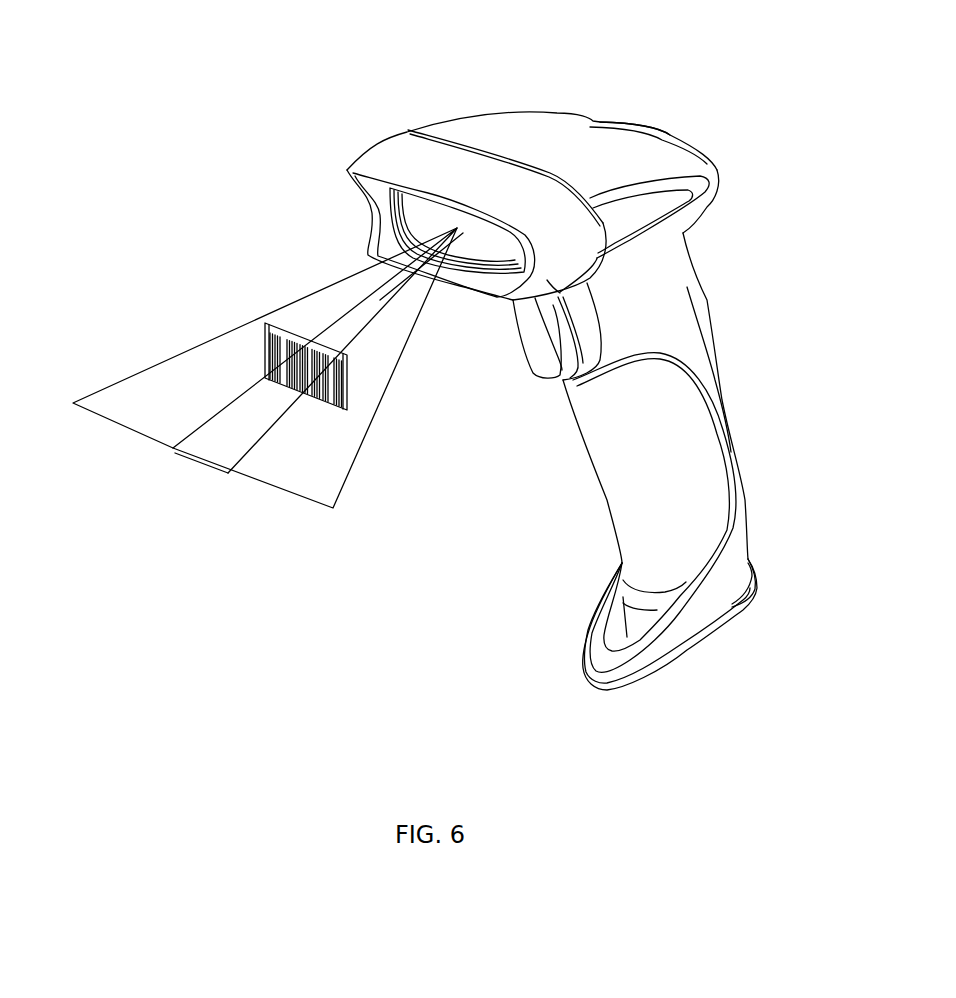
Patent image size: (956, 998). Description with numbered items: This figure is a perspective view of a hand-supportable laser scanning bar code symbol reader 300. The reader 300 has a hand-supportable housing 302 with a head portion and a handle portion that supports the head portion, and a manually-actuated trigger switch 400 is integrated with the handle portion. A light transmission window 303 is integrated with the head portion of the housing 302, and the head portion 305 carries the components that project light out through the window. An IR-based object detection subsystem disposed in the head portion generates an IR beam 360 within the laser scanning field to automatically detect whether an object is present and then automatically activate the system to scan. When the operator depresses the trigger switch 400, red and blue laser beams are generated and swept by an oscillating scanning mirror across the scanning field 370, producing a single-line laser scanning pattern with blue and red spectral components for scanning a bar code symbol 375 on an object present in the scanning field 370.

The laser scanning bar code symbol reader 300 is at (545, 364).
The hand-supportable housing 302 is at (730, 437).
The light transmission window 303 is at (427, 210).
The scanner head housing 305 is at (555, 153).
The manually-actuated trigger switch 400 is at (537, 340).
The bar code symbol 375 is at (347, 404).
The scanning field 370 is at (270, 485).
The IR beam 360 is at (343, 318).